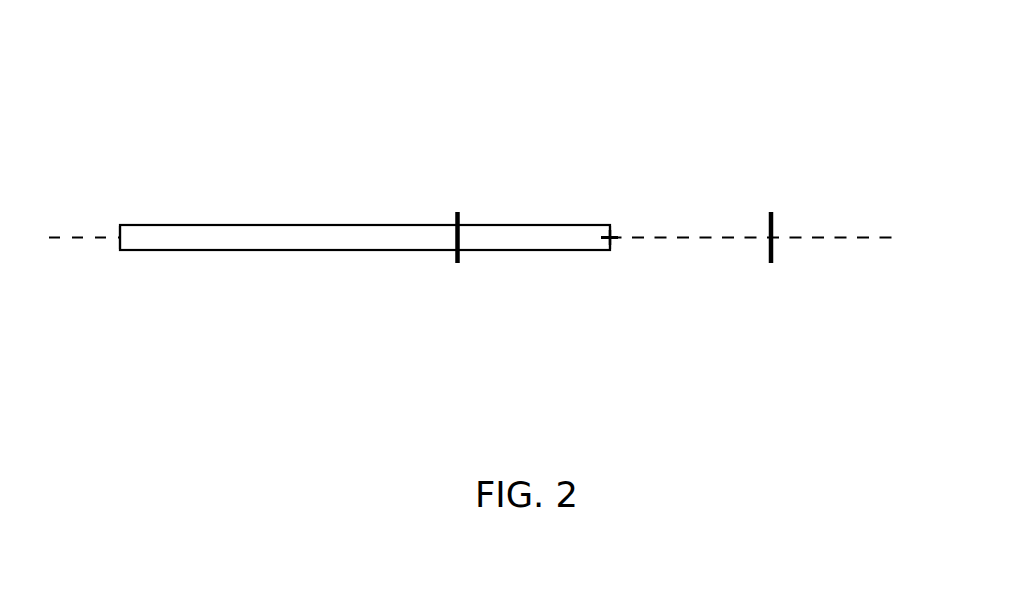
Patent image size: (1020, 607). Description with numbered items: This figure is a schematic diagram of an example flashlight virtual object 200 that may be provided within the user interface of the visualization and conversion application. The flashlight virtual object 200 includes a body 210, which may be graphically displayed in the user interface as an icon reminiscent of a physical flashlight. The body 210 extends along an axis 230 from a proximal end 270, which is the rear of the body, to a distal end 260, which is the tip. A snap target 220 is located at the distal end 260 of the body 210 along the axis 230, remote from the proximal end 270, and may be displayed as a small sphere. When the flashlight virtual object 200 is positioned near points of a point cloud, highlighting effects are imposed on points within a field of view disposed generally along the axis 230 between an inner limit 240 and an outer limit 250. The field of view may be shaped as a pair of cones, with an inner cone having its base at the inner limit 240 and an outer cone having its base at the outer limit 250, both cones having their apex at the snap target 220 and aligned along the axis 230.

The flashlight virtual object 200 is at (355, 55).
The body 210 is at (255, 225).
The snap target 220 is at (609, 226).
The axis 230 is at (873, 232).
The inner limit 240 is at (458, 212).
The outer limit 250 is at (771, 212).
The distal end 260 is at (615, 243).
The proximal end 270 is at (118, 240).